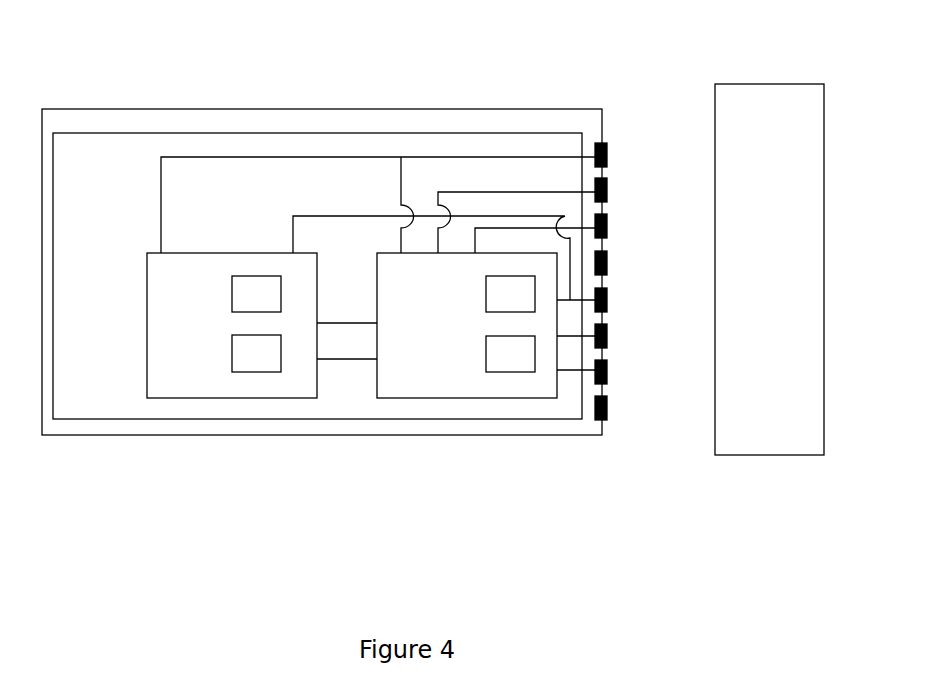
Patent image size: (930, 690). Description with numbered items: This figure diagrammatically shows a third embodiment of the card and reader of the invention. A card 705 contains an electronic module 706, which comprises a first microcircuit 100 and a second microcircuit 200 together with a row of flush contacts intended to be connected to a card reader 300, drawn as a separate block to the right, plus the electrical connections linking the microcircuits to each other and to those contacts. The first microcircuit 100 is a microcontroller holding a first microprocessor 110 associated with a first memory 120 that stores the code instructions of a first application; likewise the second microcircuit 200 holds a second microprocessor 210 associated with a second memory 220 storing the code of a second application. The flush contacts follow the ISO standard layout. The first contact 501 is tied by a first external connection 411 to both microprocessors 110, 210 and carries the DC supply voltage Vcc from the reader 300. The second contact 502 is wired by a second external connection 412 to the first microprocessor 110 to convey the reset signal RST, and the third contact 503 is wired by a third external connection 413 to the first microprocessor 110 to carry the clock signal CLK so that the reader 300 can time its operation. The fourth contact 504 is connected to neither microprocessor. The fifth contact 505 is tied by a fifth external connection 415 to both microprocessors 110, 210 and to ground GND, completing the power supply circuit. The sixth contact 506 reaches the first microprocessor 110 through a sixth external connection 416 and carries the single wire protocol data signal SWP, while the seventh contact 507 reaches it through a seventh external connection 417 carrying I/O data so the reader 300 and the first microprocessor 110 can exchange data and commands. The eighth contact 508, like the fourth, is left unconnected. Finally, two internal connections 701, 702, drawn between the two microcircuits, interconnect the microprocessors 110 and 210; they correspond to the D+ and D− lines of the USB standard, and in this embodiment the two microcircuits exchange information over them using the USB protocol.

The first microcircuit 100 is at (400, 383).
The first microprocessor 110 is at (505, 380).
The first memory 120 is at (522, 288).
The second microcircuit 200 is at (193, 383).
The second microprocessor 210 is at (256, 360).
The second memory 220 is at (250, 288).
The reader 300 is at (802, 96).
The first external connection 411 is at (187, 157).
The second external connection 412 is at (498, 192).
The third external connection 413 is at (520, 228).
The fifth external connection 415 is at (320, 215).
The sixth external connection 416 is at (573, 337).
The seventh external connection 417 is at (572, 370).
The first contact 501 is at (608, 153).
The second contact 502 is at (608, 188).
The third contact 503 is at (608, 224).
The fourth contact 504 is at (608, 261).
The fifth contact 505 is at (608, 298).
The sixth contact 506 is at (608, 334).
The seventh contact 507 is at (608, 370).
The eighth contact 508 is at (608, 406).
The internal connection 701 is at (343, 325).
The internal connection 702 is at (343, 362).
The card 705 is at (110, 122).
The electronic module 706 is at (257, 143).